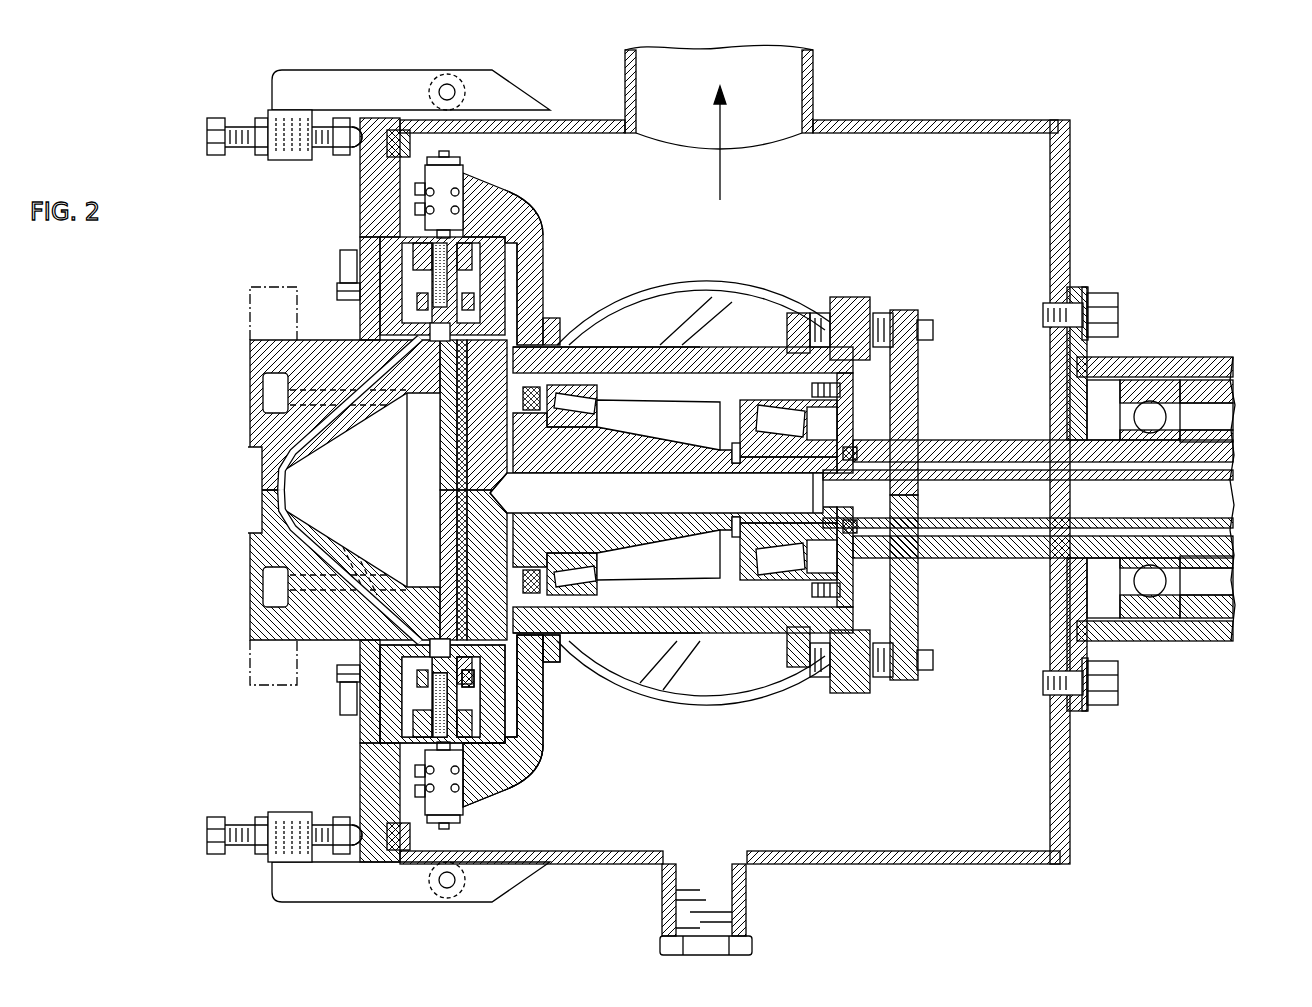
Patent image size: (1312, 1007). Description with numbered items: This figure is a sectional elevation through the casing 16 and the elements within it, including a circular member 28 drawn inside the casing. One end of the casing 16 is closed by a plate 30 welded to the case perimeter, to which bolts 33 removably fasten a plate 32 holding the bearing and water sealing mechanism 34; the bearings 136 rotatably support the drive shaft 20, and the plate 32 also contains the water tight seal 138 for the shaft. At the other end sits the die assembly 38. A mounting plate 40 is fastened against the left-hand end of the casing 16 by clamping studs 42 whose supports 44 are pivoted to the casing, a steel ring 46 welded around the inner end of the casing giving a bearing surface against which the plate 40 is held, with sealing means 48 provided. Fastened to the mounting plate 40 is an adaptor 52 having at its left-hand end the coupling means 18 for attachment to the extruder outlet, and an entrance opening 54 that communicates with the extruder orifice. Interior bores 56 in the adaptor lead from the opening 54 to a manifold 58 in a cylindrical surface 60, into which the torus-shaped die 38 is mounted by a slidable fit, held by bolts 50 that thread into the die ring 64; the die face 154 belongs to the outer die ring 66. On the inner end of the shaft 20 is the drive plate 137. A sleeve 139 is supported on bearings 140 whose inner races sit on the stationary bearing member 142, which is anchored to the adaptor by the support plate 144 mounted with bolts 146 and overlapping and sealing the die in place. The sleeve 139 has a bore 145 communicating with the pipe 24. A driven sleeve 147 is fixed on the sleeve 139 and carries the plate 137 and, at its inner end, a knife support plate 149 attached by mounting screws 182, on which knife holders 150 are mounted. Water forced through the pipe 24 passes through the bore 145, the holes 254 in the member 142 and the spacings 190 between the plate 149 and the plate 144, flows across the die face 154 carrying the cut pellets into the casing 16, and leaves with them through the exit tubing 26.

The casing 16 is at (972, 128).
The coupling means 18 is at (263, 285).
The drive shaft 20 is at (1235, 458).
The pipe 24 is at (1218, 492).
The exit tubing 26 is at (815, 87).
The casing 28 is at (724, 677).
The plate 30 is at (1072, 180).
The plate 32 is at (1077, 285).
The bolts 33 is at (1100, 300).
The bearing and water sealing mechanism 34 is at (1150, 353).
The die assembly 38 is at (542, 235).
The mounting plate 40 is at (360, 210).
The clamping studs 42 is at (240, 127).
The supports 44 is at (336, 79).
The steel ring 46 is at (411, 160).
The sealing means 48 is at (362, 158).
The bolts 50 is at (338, 290).
The adaptor 52 is at (300, 648).
The entrance opening 54 is at (255, 495).
The interior bores 56 is at (290, 452).
The manifold 58 is at (490, 308).
The cylindrical surface 60 is at (528, 252).
The die ring 64 is at (477, 720).
The outer die ring 66 is at (467, 712).
The bearings 136 is at (1172, 410).
The drive plate 137 is at (908, 390).
The water tight seal 138 is at (1045, 433).
The sleeve 139 is at (745, 360).
The bearings 140 is at (775, 428).
The stationary bearing member 142 is at (677, 440).
The support plate 144 is at (480, 448).
The bore 145 is at (663, 490).
The bolts 146 is at (480, 340).
The driven sleeve 147 is at (605, 352).
The knife support plate 149 is at (522, 212).
The knife holders 150 is at (450, 188).
The die face 154 is at (395, 748).
The mounting screws 182 is at (507, 678).
The spacings 190 is at (493, 694).
The holes 254 is at (510, 474).